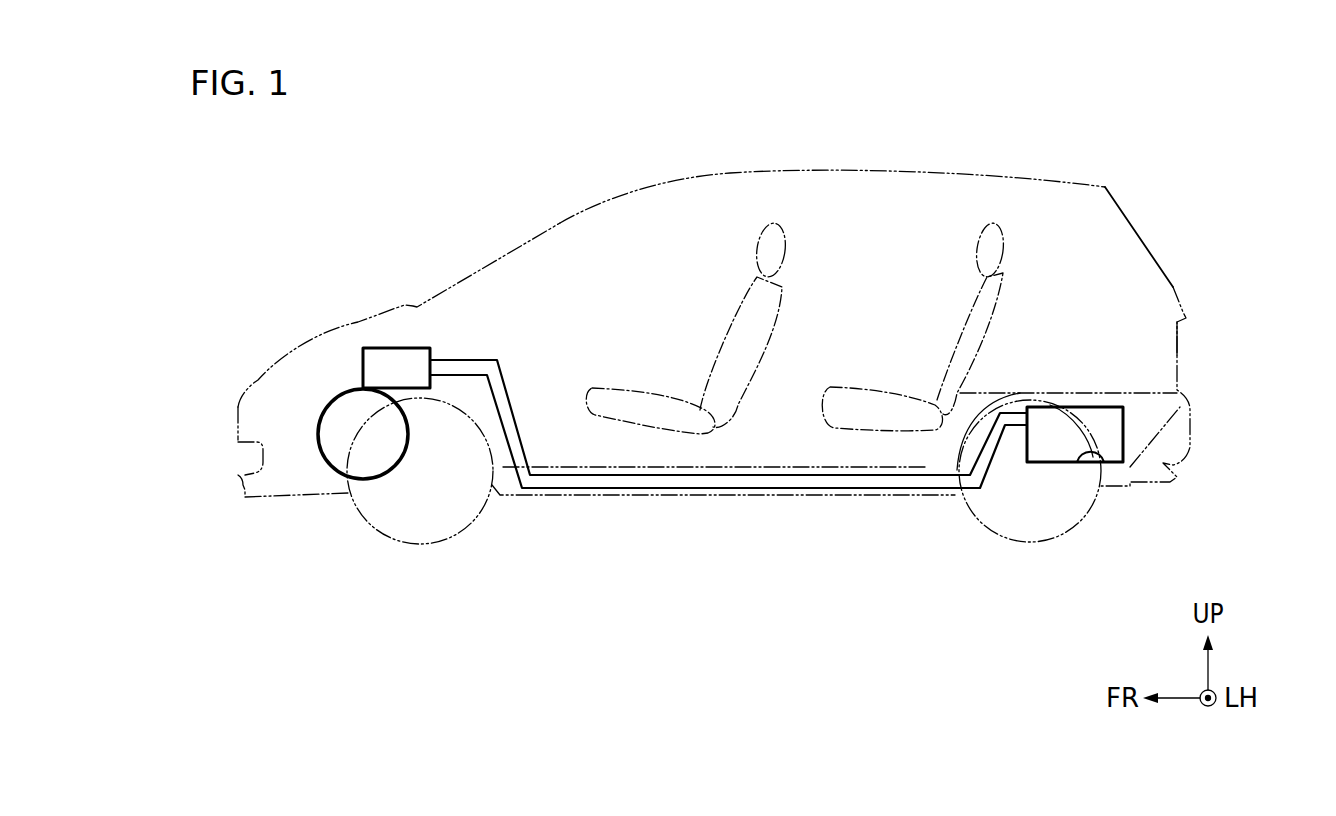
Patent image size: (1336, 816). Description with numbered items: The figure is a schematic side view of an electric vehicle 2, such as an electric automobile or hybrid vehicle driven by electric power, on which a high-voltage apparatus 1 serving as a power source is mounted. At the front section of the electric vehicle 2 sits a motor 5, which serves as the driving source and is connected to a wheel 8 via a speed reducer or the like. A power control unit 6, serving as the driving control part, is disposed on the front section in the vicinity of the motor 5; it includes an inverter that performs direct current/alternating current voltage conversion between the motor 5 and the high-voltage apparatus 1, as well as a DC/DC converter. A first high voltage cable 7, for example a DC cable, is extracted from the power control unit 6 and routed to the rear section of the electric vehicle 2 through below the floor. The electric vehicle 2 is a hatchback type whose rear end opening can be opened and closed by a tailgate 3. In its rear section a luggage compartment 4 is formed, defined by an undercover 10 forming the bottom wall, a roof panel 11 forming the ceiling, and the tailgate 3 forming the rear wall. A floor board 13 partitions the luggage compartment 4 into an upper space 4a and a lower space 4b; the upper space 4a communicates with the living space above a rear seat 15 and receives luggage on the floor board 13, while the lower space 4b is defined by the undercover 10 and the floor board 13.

The high-voltage apparatus 1 is at (1125, 428).
The electric vehicle 2 is at (1118, 182).
The tailgate 3 is at (1178, 352).
The luggage compartment 4 is at (1093, 300).
The upper space 4a is at (1102, 253).
The lower space 4b is at (1020, 457).
The motor 5 is at (333, 467).
The power control unit 6 is at (392, 348).
The first high voltage cable 7 is at (695, 490).
The wheel 8 is at (430, 544).
The undercover 10 is at (1100, 463).
The roof panel 11 is at (973, 168).
The floor board 13 is at (1120, 392).
The rear seat 15 is at (877, 435).